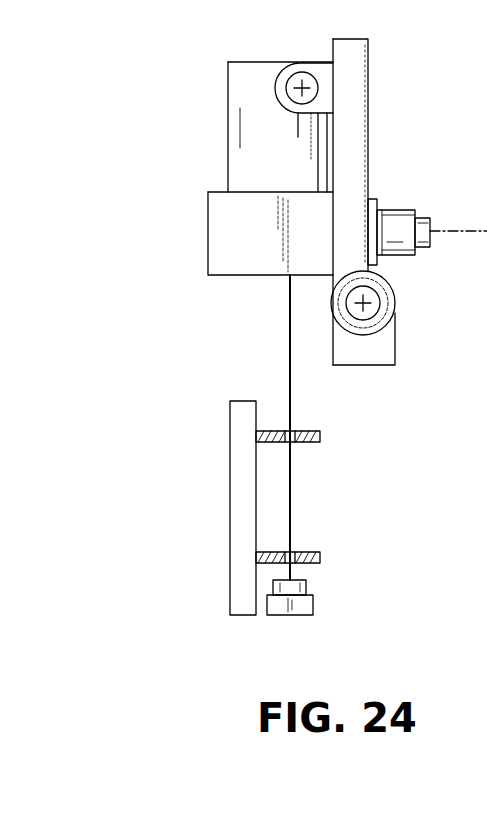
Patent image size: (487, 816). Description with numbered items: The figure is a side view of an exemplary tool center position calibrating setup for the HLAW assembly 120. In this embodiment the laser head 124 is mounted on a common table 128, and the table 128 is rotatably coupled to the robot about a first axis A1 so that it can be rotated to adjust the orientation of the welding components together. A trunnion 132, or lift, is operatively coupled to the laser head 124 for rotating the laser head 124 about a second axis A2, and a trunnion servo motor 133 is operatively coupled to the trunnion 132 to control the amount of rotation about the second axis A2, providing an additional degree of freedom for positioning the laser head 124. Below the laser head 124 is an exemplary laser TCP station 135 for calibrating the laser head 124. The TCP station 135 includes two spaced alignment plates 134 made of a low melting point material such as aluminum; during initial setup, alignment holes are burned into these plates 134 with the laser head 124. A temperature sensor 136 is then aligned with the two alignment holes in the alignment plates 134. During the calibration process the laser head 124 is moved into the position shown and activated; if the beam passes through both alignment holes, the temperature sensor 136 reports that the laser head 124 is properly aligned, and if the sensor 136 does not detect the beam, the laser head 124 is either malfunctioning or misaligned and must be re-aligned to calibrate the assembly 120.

The HLAW assembly 120 is at (381, 93).
The laser head 124 is at (217, 236).
The table 128 is at (350, 157).
The trunnion 132 is at (398, 208).
The trunnion servo motor 133 is at (432, 238).
The alignment plates 134 is at (320, 436).
The laser TCP station 135 is at (214, 480).
The temperature sensor 136 is at (313, 599).
The first axis A1 is at (363, 303).
The second axis A2 is at (302, 88).